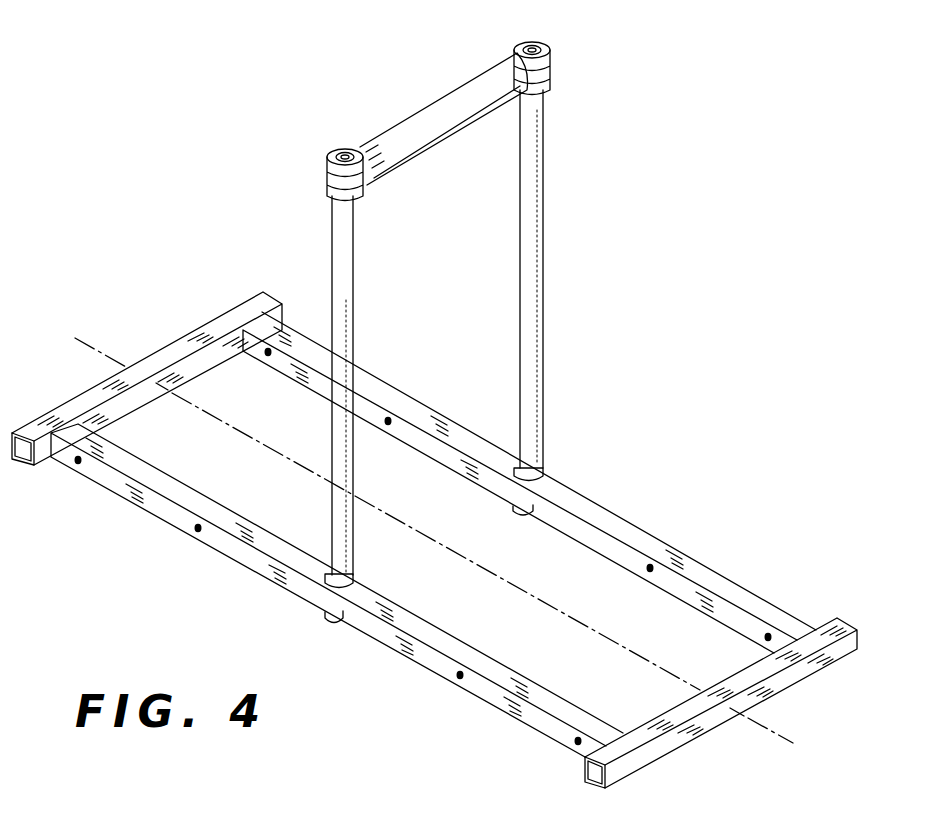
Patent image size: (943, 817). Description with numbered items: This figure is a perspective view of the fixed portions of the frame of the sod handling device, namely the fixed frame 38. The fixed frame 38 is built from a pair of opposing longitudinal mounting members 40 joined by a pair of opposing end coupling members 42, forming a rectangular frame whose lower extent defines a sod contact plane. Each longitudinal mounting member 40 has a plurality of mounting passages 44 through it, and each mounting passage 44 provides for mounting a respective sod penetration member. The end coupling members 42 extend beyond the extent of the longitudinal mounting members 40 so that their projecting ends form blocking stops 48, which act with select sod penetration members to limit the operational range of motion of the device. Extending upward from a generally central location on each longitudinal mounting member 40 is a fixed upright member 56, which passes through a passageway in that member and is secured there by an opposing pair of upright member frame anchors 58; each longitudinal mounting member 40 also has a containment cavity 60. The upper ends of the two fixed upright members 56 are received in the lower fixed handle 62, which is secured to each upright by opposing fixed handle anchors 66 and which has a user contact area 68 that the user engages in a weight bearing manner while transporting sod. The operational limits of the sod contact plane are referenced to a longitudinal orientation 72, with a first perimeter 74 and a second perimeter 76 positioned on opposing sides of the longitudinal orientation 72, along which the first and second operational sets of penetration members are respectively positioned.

The fixed frame 38 is at (205, 228).
The longitudinal mounting member 40 is at (737, 584).
The end coupling member 42 is at (190, 332).
The mounting passage 44 is at (267, 357).
The blocking stop 48 is at (276, 316).
The fixed upright member 56 is at (416, 292).
The upright member frame anchor 58 is at (545, 471).
The containment cavity 60 is at (338, 150).
The lower fixed handle 62 is at (440, 98).
The fixed handle anchor 66 is at (325, 167).
The user contact area 68 is at (442, 138).
The longitudinal orientation 72 is at (622, 650).
The first perimeter 74 is at (445, 677).
The second perimeter 76 is at (607, 553).